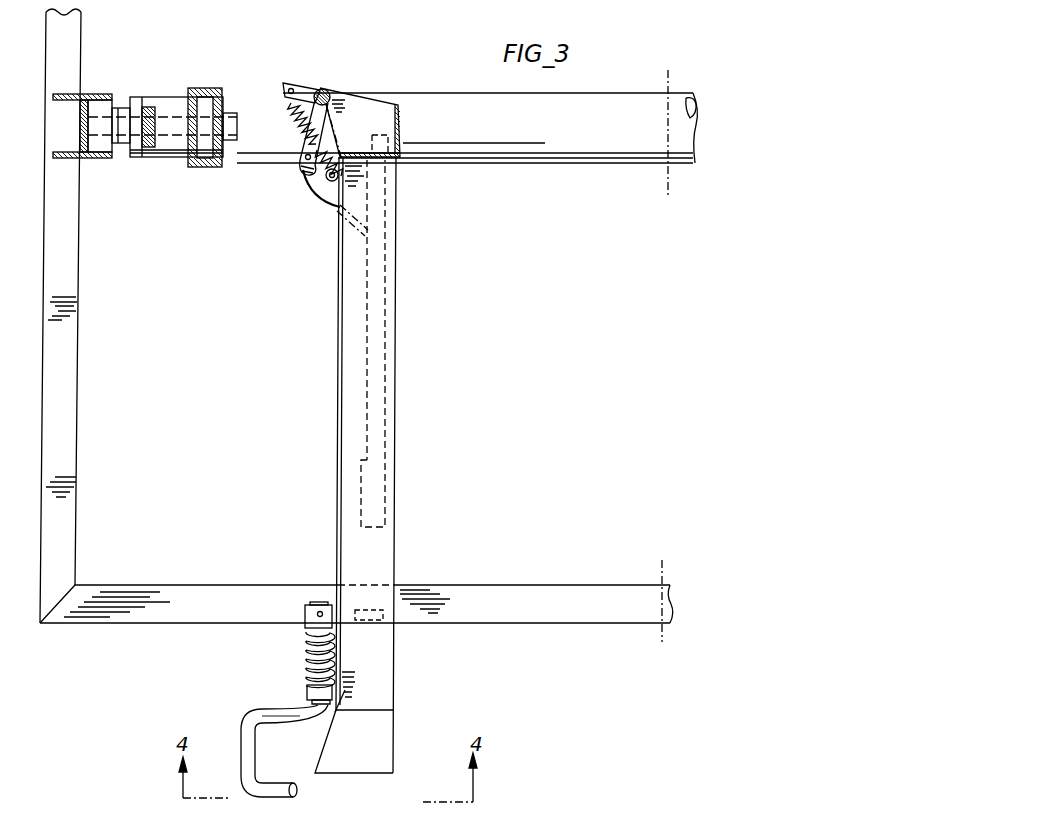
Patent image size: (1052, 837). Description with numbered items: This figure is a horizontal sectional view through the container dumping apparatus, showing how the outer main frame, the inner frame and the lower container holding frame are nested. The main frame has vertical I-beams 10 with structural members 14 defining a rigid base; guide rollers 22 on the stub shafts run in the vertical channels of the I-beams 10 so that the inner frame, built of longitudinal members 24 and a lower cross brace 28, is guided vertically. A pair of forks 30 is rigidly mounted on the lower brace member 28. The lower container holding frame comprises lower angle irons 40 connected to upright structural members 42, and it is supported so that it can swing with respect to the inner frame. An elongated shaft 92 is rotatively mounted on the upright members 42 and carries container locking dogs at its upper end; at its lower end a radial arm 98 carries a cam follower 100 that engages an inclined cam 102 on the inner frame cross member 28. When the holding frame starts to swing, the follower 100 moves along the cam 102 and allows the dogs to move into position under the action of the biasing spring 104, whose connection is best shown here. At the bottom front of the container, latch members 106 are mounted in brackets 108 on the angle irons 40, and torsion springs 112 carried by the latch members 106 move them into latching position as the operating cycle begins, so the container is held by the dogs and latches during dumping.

The I-beam 10 is at (86, 94).
The structural member 14 is at (57, 262).
The guide roller 22 is at (110, 107).
The longitudinal member 24 is at (207, 90).
The lower cross brace 28 is at (565, 155).
The fork 30 is at (388, 395).
The lower angle iron 40 is at (383, 677).
The upright structural member 42 is at (402, 117).
The elongated shaft 92 is at (323, 89).
The radial arm 98 is at (298, 143).
The cam follower 100 is at (307, 173).
The inclined cam 102 is at (330, 200).
The biasing spring 104 is at (297, 112).
The latch member 106 is at (277, 792).
The bracket 108 is at (305, 628).
The torsion spring 112 is at (327, 653).